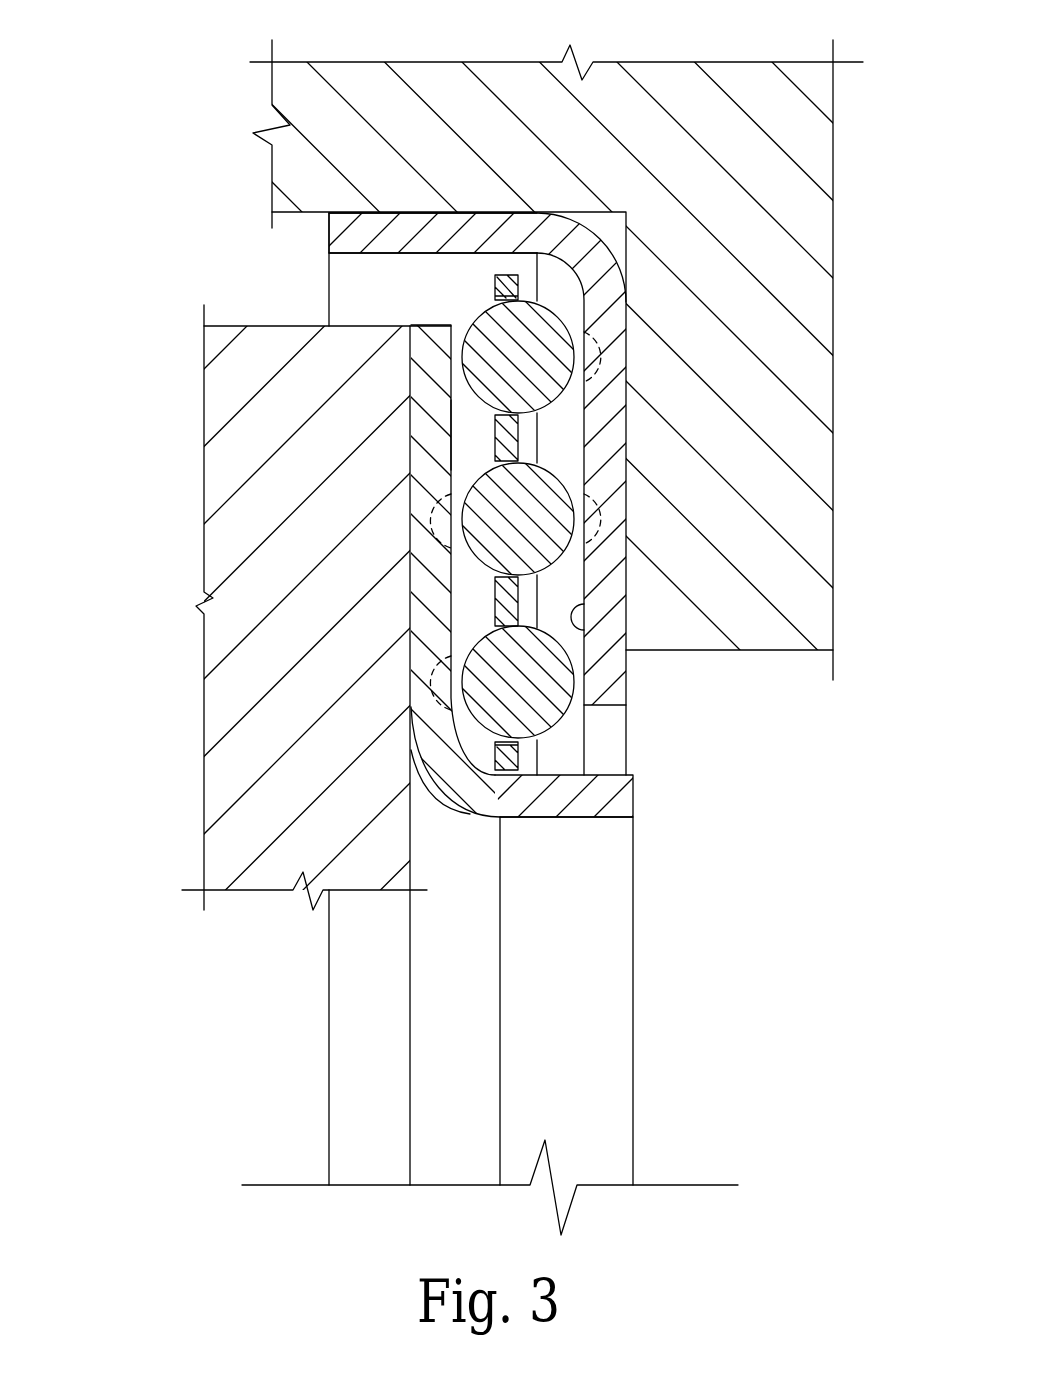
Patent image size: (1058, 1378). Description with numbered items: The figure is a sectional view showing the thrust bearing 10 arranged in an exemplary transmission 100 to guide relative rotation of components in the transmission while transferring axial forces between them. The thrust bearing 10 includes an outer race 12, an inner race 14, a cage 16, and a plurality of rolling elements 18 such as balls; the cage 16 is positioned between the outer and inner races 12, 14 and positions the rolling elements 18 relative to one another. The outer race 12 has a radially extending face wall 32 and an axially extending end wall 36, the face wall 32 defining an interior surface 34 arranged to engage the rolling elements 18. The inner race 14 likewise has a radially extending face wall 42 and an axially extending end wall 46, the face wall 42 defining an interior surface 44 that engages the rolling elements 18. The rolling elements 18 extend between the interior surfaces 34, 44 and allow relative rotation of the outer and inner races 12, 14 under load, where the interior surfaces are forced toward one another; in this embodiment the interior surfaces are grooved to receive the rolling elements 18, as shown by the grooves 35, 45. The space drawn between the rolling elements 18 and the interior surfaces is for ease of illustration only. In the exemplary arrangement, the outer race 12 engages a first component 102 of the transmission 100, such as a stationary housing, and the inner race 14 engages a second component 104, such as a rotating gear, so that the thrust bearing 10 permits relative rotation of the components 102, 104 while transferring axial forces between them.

The transmission 100 is at (150, 100).
The thrust bearing 10 is at (292, 291).
The first component 102 is at (781, 179).
The second component 104 is at (327, 551).
The axially extending end wall 36 is at (400, 213).
The cage 16 is at (507, 270).
The rolling elements 18 is at (554, 308).
The radially extending face wall 32 is at (612, 494).
The interior surface 34 is at (588, 632).
The groove 35 is at (605, 354).
The radially extending face wall 42 is at (404, 612).
The interior surface 44 is at (437, 433).
The groove 45 is at (427, 690).
The outer race 12 is at (610, 700).
The inner race 14 is at (652, 801).
The axially extending end wall 46 is at (607, 826).